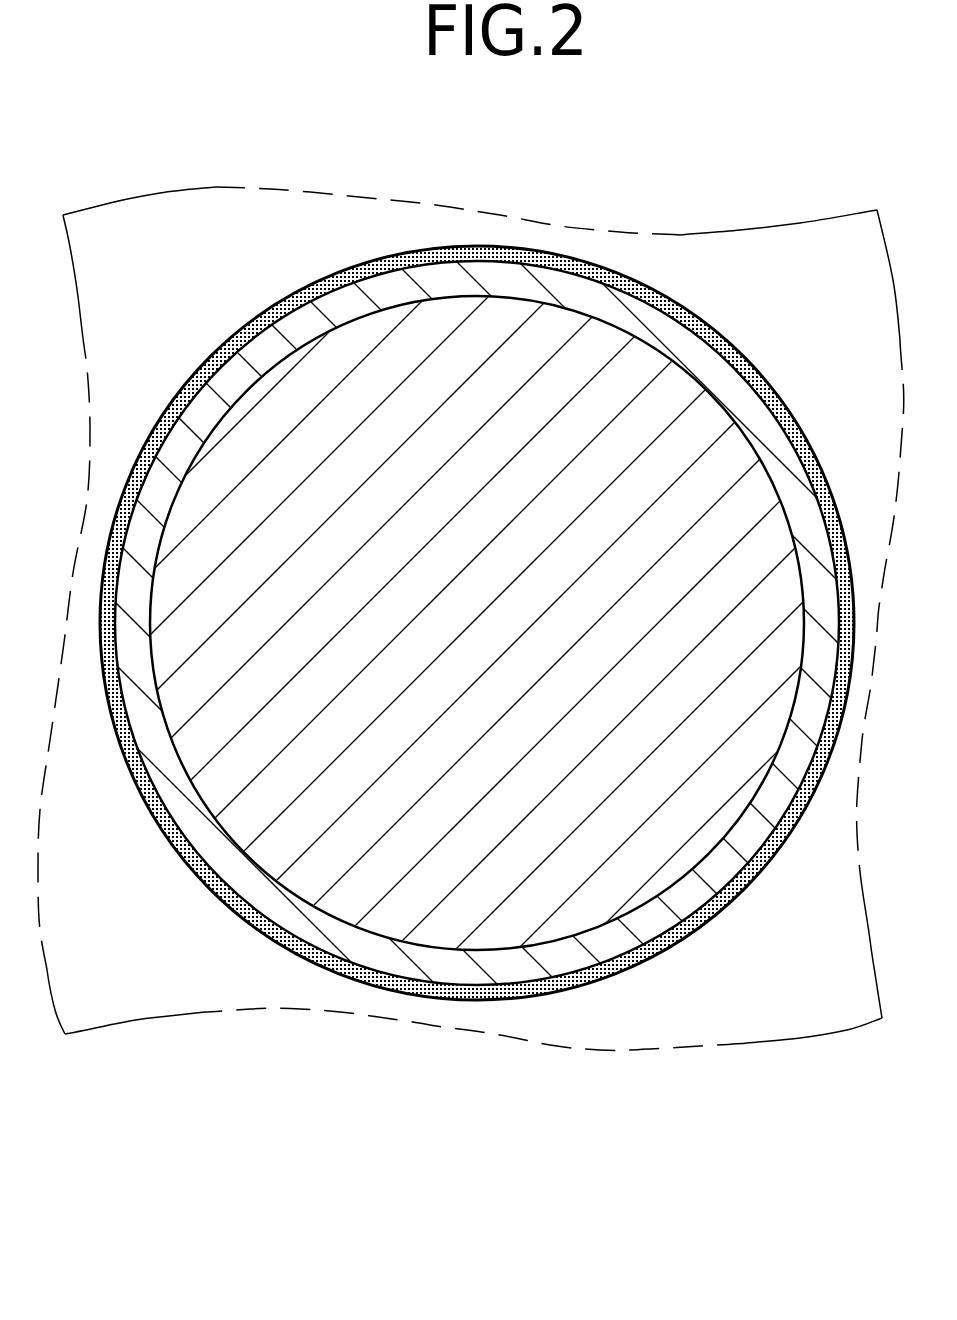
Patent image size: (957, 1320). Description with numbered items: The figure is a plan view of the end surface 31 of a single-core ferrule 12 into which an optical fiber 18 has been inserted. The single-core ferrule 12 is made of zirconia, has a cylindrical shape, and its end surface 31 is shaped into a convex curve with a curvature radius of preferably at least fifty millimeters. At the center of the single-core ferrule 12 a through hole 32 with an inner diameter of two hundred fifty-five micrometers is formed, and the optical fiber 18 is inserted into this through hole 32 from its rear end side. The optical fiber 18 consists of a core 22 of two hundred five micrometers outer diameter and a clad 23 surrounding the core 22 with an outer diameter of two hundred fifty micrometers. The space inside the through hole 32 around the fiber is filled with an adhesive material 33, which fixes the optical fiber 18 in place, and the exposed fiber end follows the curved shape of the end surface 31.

The single-core ferrule 12 is at (98, 1030).
The optical fiber 18 is at (448, 993).
The core 22 is at (627, 892).
The clad 23 is at (500, 973).
The end surface 31 is at (262, 980).
The through hole 32 is at (228, 885).
The adhesive material 33 is at (557, 957).